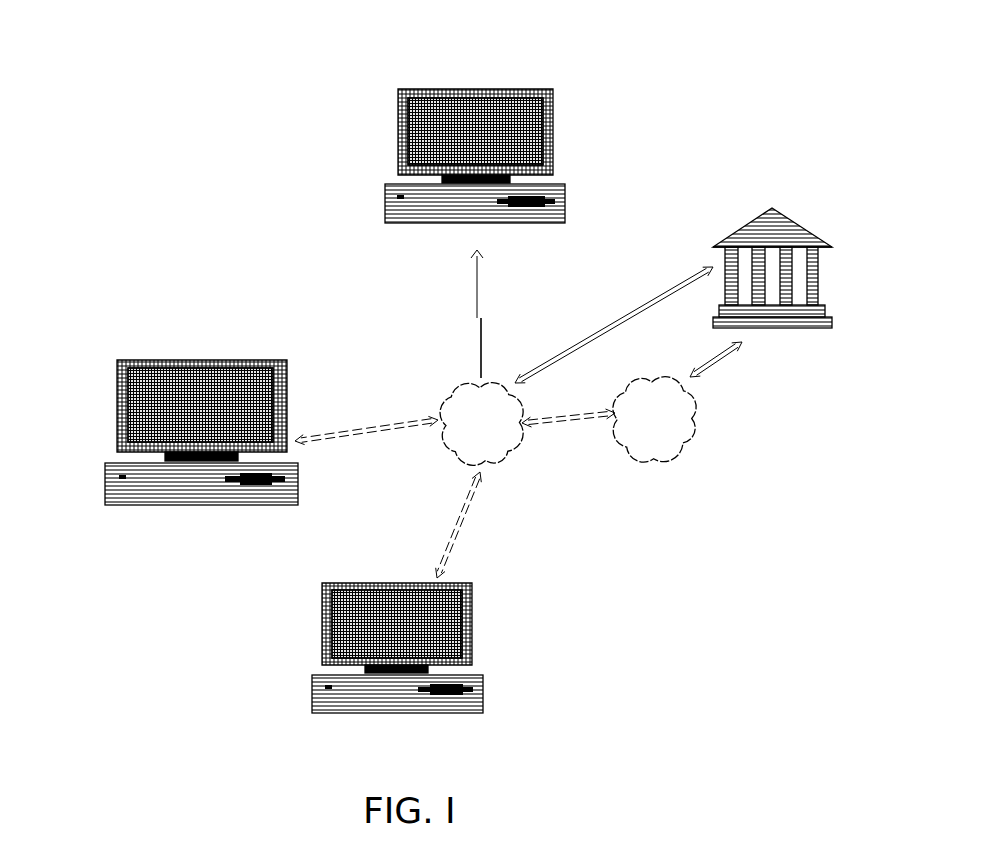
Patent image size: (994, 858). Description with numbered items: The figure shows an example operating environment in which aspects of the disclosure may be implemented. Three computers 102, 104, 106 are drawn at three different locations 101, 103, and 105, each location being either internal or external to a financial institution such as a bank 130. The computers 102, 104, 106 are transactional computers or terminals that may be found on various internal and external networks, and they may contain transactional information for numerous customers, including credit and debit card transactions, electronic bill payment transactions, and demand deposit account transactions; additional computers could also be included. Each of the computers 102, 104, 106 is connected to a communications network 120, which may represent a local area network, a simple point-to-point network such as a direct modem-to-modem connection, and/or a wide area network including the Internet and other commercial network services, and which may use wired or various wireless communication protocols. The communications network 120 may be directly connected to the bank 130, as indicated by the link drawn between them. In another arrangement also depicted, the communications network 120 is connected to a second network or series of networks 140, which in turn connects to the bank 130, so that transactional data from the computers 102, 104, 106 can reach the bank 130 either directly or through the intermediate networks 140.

The location 101 is at (475, 90).
The computer 102 is at (388, 243).
The location 103 is at (117, 363).
The computer 104 is at (92, 513).
The location 105 is at (477, 615).
The computer 106 is at (338, 740).
The communications network 120 is at (519, 452).
The bank 130 is at (814, 323).
The second network or series of networks 140 is at (689, 450).